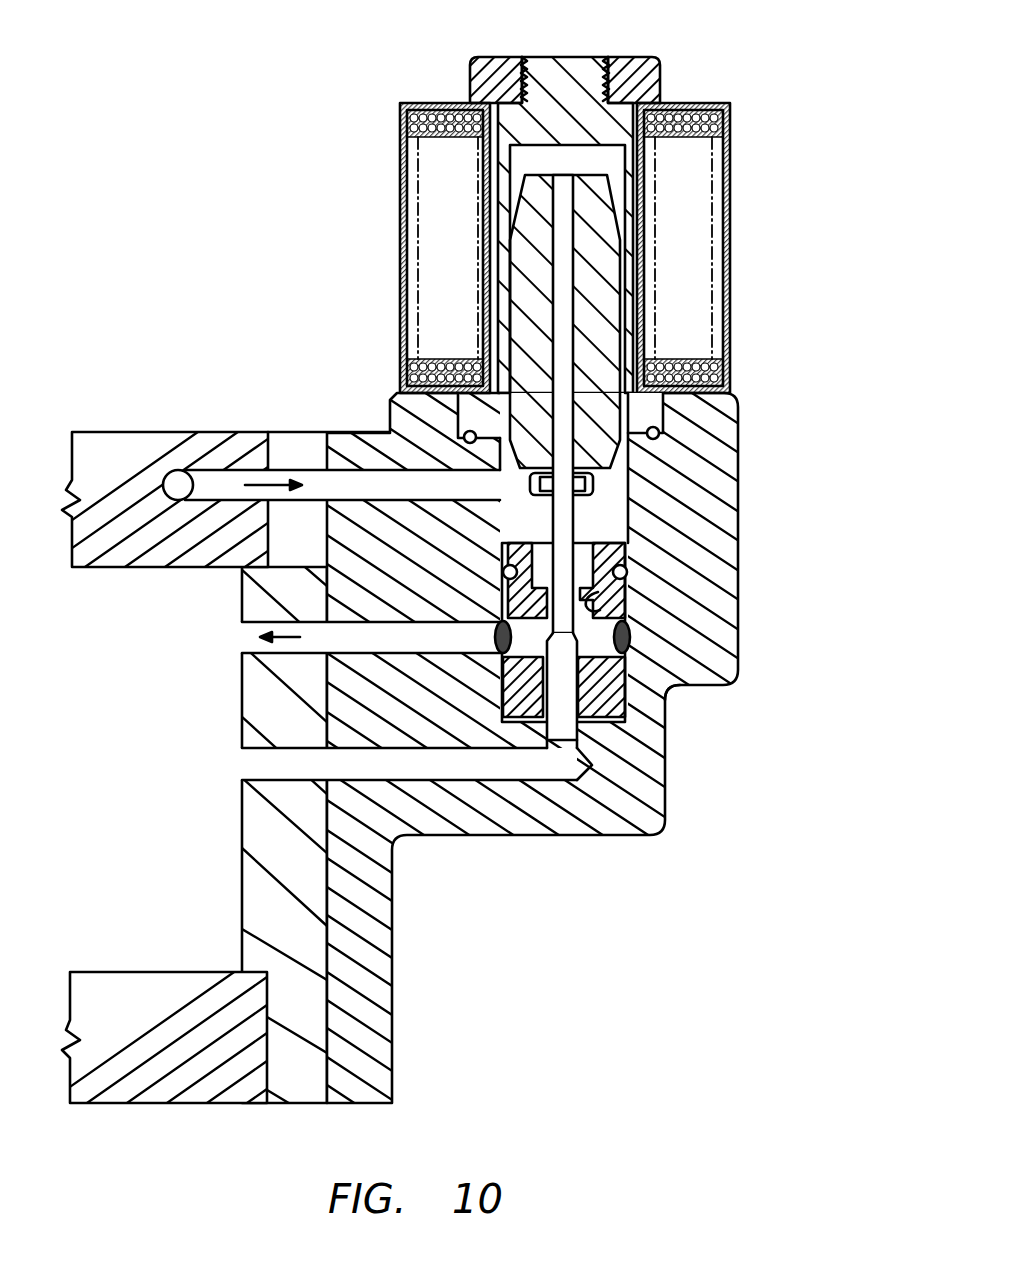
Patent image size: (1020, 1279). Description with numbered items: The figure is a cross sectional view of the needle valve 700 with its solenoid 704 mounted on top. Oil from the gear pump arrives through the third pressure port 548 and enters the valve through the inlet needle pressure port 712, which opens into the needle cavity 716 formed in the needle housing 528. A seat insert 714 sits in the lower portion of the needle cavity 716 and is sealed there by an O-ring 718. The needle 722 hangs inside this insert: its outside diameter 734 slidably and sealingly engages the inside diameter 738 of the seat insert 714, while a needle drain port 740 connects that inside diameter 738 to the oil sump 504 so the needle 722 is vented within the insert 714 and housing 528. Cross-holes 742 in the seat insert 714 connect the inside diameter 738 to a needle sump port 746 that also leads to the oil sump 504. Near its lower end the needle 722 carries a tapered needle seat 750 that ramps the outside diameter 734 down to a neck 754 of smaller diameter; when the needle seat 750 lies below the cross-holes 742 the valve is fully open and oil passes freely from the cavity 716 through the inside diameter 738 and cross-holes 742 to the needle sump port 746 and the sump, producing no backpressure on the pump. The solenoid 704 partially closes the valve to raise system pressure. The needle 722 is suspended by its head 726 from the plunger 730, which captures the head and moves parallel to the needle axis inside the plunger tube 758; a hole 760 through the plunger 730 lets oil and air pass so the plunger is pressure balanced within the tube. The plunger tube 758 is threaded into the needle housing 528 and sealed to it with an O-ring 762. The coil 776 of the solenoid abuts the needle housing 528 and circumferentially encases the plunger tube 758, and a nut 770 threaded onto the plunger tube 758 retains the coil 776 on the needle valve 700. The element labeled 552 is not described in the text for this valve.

The oil sump 504 is at (200, 956).
The needle housing 528 is at (738, 677).
The third pressure port 548 is at (295, 468).
The check ball 552 is at (188, 470).
The needle valve 700 is at (775, 309).
The solenoid 704 is at (450, 103).
The inlet needle pressure port 712 is at (367, 470).
The seat insert 714 is at (630, 722).
The needle cavity 716 is at (615, 550).
The O-ring 718 is at (627, 572).
The needle 722 is at (568, 745).
The head 726 is at (596, 478).
The plunger 730 is at (520, 236).
The outside diameter 734 is at (580, 646).
The inside diameter 738 is at (600, 601).
The needle drain port 740 is at (258, 767).
The cross-holes 742 is at (669, 689).
The needle sump port 746 is at (250, 630).
The tapered needle seat 750 is at (628, 637).
The neck 754 is at (588, 488).
The plunger tube 758 is at (594, 56).
The hole 760 is at (568, 272).
The O-ring 762 is at (475, 432).
The nut 770 is at (660, 84).
The coil 776 is at (732, 173).